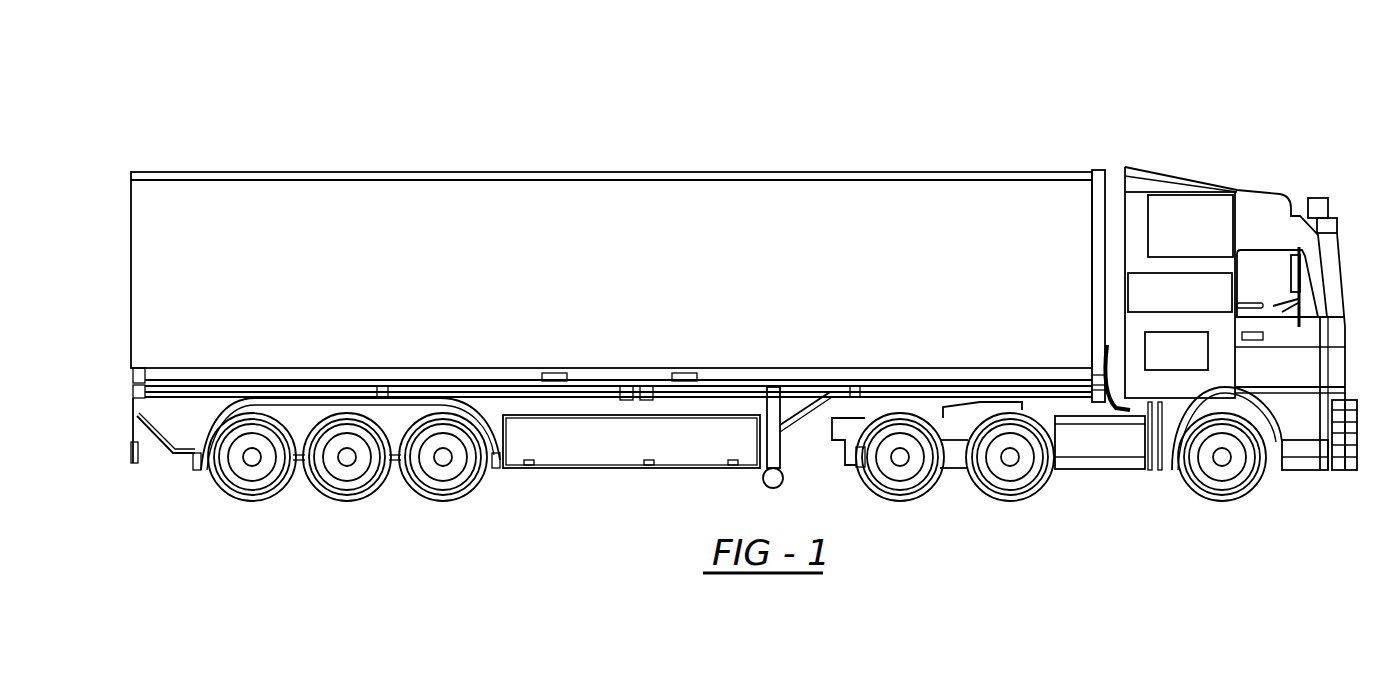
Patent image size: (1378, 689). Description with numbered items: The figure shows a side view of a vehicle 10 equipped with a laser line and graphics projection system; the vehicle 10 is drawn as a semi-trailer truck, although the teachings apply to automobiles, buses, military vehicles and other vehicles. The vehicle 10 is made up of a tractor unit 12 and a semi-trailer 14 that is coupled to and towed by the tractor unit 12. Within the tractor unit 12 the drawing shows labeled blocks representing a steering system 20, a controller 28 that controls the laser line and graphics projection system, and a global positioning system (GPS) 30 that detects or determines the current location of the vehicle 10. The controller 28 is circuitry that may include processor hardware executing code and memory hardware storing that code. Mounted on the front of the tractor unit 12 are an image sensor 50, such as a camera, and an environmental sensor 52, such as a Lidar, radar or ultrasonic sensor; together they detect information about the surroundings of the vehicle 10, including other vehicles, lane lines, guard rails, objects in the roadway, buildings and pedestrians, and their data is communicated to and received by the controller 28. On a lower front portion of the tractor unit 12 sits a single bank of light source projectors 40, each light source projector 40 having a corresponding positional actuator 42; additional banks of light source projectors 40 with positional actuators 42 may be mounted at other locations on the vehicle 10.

The vehicle 10 is at (1235, 86).
The tractor unit 12 is at (1173, 173).
The semi-trailer 14 is at (1003, 172).
The steering system 20 is at (1233, 222).
The controller 28 is at (1147, 273).
The global positioning system (GPS) 30 is at (1145, 352).
The light source projector 40 is at (1351, 476).
The positional actuator 42 is at (1338, 476).
The image sensor 50 is at (1320, 198).
The environmental sensor 52 is at (1338, 226).